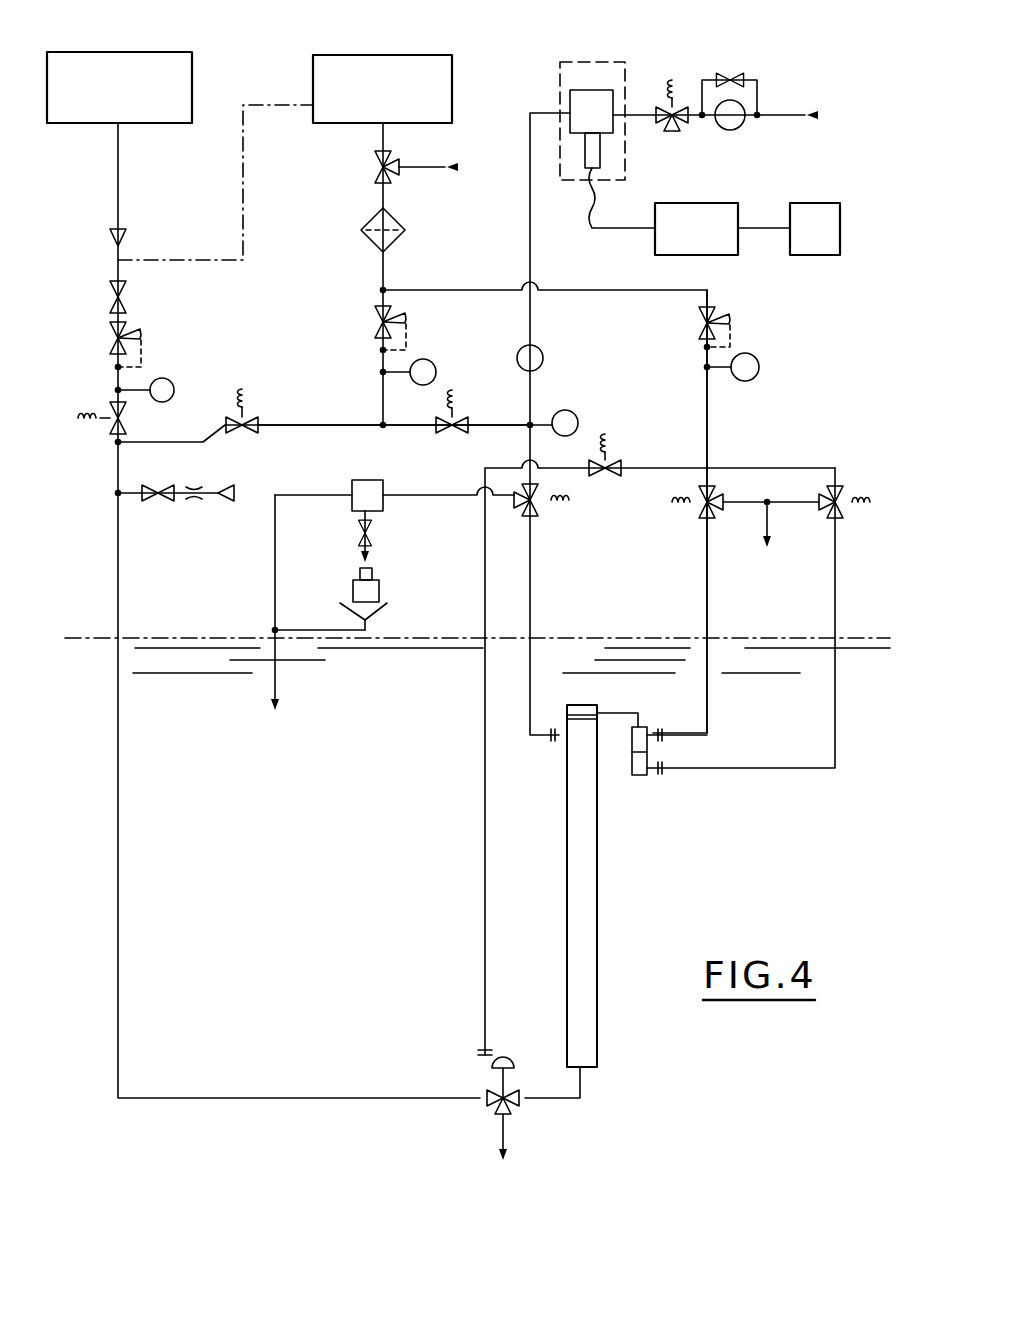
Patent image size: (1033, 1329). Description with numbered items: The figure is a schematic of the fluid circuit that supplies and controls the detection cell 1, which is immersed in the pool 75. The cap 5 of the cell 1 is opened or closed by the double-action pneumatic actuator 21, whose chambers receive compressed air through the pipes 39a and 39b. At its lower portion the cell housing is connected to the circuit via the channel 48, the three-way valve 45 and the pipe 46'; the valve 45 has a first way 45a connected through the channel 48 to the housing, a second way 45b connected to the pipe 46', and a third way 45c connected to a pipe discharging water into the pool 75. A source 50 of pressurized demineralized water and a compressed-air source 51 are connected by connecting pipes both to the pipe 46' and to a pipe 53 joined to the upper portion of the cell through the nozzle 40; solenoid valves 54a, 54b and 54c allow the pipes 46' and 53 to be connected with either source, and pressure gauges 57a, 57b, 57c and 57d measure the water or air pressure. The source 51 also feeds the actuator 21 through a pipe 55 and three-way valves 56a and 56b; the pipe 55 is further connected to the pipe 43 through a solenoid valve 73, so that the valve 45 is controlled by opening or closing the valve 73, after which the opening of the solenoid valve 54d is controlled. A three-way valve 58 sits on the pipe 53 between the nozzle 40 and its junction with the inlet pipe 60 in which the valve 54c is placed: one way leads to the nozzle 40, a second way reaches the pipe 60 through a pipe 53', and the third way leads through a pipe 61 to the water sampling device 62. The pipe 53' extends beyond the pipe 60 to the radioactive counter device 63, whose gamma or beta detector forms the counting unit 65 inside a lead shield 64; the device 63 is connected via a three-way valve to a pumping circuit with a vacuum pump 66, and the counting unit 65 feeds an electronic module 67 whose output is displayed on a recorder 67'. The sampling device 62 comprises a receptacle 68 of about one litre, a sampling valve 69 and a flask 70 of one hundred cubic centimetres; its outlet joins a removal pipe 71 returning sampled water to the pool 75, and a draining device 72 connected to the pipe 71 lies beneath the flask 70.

The cell 1 is at (604, 938).
The cap 5 is at (584, 710).
The double-action pneumatic actuator 21 is at (641, 784).
The pipe 39a is at (712, 716).
The pipe 39b is at (760, 770).
The nozzle 40 is at (548, 745).
The pipe 43 is at (478, 908).
The three-way valve 45 is at (516, 1055).
The first way 45a is at (517, 1109).
The second way 45b is at (490, 1112).
The third way 45c is at (498, 1121).
The pipe 46' is at (349, 610).
The channel 48 is at (590, 1080).
The source of pressurized demineralized water 50 is at (138, 73).
The compressed-air source 51 is at (345, 75).
The pipe 53 is at (501, 438).
The pipe 53' is at (566, 401).
The solenoid valve 54a is at (128, 418).
The solenoid valve 54b is at (256, 437).
The solenoid valve 54c is at (454, 420).
The solenoid valve 54d is at (163, 506).
The pipe 55 is at (710, 438).
The three-way valve 56a is at (714, 520).
The three-way valve 56b is at (819, 520).
The pressure gauge 57a is at (165, 380).
The pressure gauge 57b is at (430, 366).
The pressure gauge 57c is at (574, 414).
The pressure gauge 57d is at (755, 372).
The three-way valve 58 is at (568, 523).
The inlet pipe 60 is at (481, 428).
The pipe 61 is at (458, 498).
The water sampling device 62 is at (380, 486).
The radioactive counter device 63 is at (575, 119).
The lead shield 64 is at (573, 62).
The counting unit 65 is at (603, 150).
The vacuum pump 66 is at (766, 108).
The electronic module 67 is at (663, 219).
The recorder 67' is at (793, 250).
The receptacle 68 is at (378, 509).
The sampling valve 69 is at (348, 546).
The flask 70 is at (376, 576).
The removal pipe 71 is at (284, 695).
The draining device 72 is at (384, 606).
The solenoid valve 73 is at (612, 484).
The pool 75 is at (477, 673).